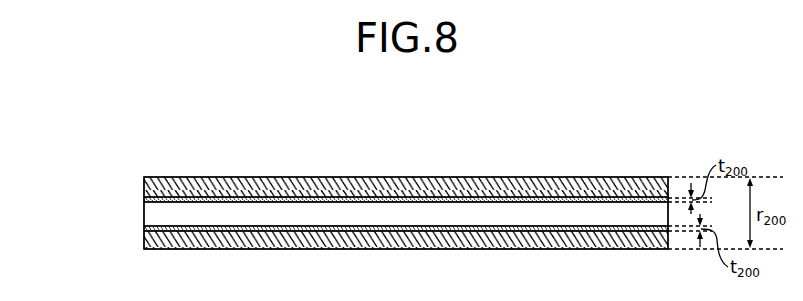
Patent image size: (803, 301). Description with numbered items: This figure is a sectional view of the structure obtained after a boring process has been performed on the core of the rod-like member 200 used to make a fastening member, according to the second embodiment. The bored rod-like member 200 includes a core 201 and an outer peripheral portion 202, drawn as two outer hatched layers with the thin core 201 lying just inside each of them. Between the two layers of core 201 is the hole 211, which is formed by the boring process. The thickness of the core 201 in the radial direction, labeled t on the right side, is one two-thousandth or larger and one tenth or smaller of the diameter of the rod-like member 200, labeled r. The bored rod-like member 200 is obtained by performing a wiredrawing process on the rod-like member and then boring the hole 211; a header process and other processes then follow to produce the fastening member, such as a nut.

The rod-like member 200 is at (443, 138).
The outer peripheral portion 202 is at (144, 186).
The core 201 is at (144, 199).
The hole 211 is at (154, 214).